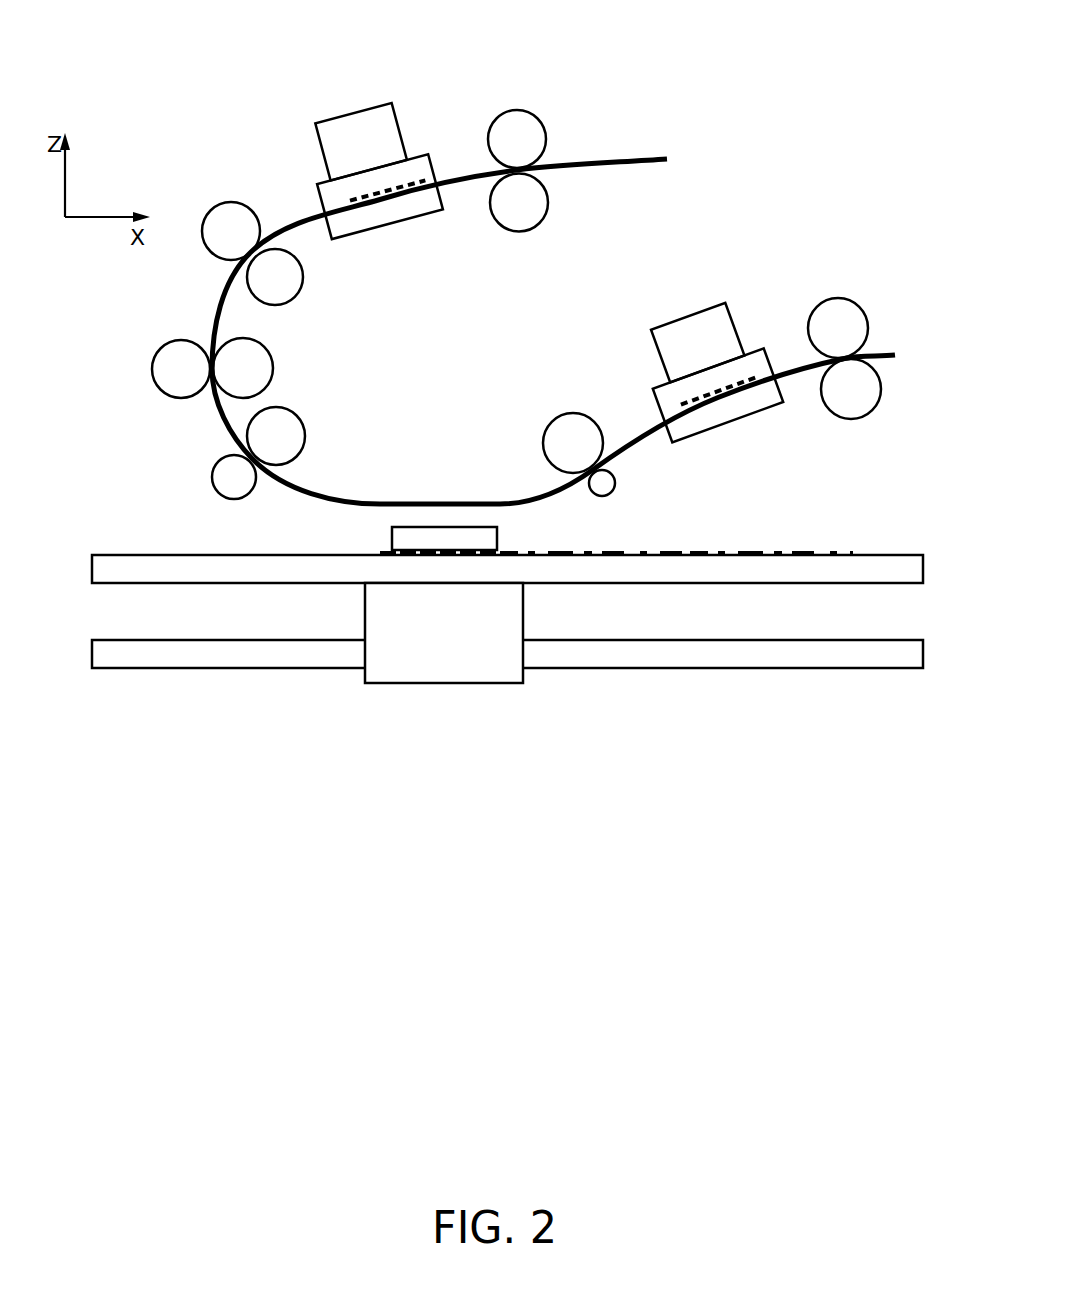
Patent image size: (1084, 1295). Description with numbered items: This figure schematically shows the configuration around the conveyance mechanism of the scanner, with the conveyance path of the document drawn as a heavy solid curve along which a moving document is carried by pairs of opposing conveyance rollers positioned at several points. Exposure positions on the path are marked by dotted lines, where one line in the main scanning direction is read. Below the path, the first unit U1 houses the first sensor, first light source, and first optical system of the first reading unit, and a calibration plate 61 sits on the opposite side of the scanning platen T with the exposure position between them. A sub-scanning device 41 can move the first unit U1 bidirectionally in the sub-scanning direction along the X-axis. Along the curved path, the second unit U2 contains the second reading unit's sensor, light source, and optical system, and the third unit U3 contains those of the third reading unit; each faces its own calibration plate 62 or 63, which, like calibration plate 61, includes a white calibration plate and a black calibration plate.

The sub-scanning device 41 is at (838, 668).
The calibration plate 61 is at (392, 537).
The calibration plate 62 is at (388, 224).
The calibration plate 63 is at (723, 427).
The scanning platen T is at (148, 583).
The first unit U1 is at (365, 683).
The second unit U2 is at (392, 103).
The third unit U3 is at (725, 301).